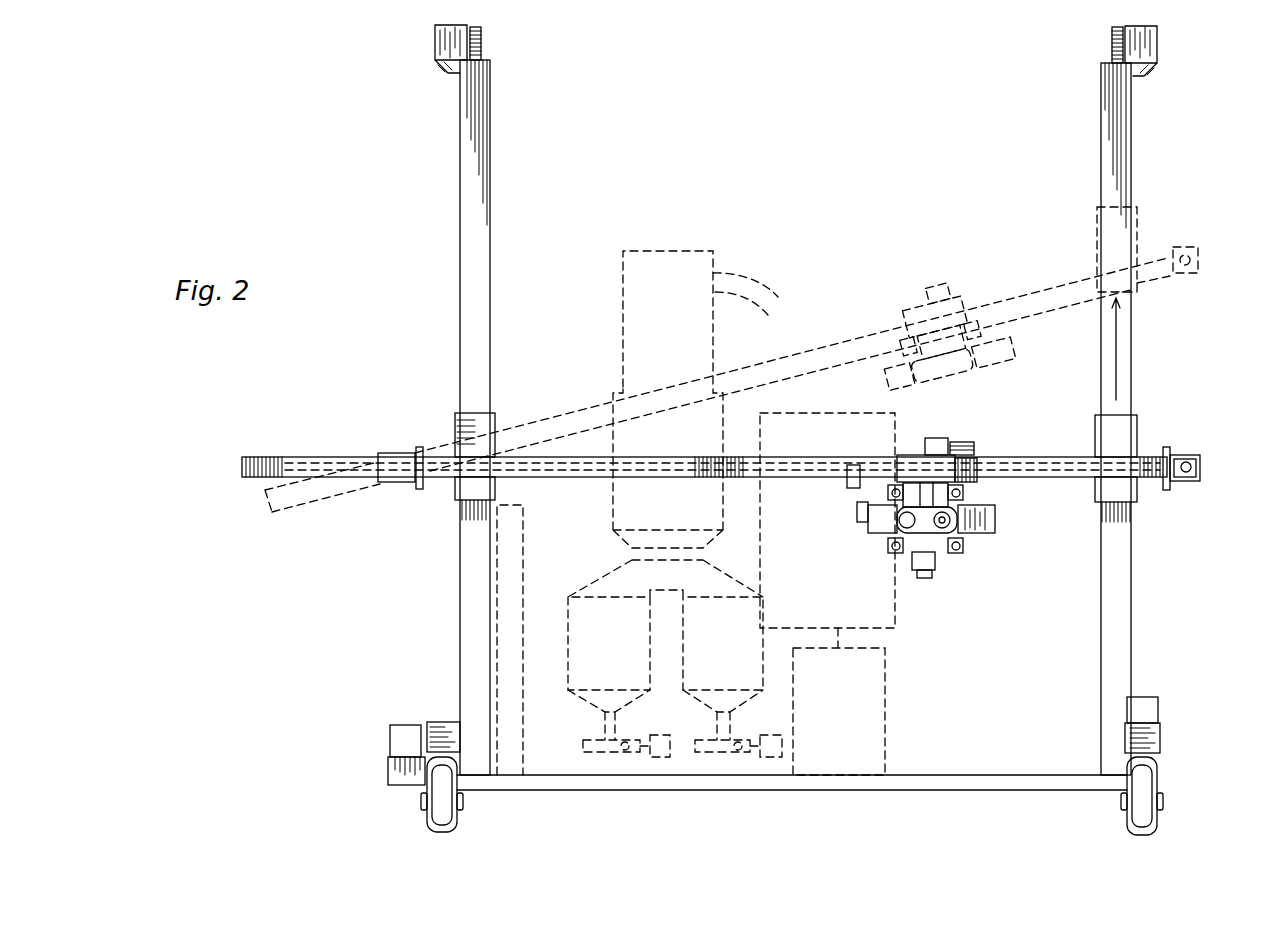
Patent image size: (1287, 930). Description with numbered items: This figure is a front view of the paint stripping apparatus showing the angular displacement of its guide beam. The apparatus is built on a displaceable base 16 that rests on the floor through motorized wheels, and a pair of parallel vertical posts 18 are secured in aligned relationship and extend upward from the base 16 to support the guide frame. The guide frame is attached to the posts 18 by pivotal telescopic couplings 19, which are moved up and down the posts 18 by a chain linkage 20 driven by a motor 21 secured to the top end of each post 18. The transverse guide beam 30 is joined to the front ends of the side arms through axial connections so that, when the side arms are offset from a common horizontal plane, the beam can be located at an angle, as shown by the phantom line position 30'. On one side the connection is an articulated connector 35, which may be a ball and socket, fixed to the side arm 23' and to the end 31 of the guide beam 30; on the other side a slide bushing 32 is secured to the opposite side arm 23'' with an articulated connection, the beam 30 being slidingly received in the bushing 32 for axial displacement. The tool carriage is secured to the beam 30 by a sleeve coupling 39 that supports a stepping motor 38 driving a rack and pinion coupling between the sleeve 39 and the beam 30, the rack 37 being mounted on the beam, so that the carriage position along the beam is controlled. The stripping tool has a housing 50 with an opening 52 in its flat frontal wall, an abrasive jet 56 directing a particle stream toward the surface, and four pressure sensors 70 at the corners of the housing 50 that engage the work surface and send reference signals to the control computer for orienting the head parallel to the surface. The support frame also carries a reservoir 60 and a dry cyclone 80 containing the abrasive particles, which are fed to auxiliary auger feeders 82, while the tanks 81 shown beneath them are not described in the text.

The displaceable base 16 is at (968, 778).
The vertical posts 18 is at (490, 208).
The pivotal telescopic couplings 19 is at (503, 418).
The chain linkage 20 is at (483, 47).
The motor 21 is at (447, 38).
The side arm 23' is at (1195, 490).
The side arm 23'' is at (393, 496).
The transverse guide beam 30 is at (704, 444).
The phantom line position of guide beam 30' is at (731, 379).
The end of guide beam 31 is at (1160, 455).
The slide bushing 32 is at (414, 455).
The articulated connector 35 is at (1196, 462).
The rack 37 is at (1068, 480).
The stepping motor 38 is at (942, 440).
The sleeve coupling 39 is at (913, 455).
The housing 50 is at (977, 530).
The opening 52 is at (925, 523).
The abrasive jet 56 is at (940, 527).
The reservoir 60 is at (635, 495).
The pressure sensors 70 is at (977, 470).
The dry cyclone 80 is at (633, 262).
The tank 81 is at (598, 612).
The auxiliary auger feeders 82 is at (600, 757).